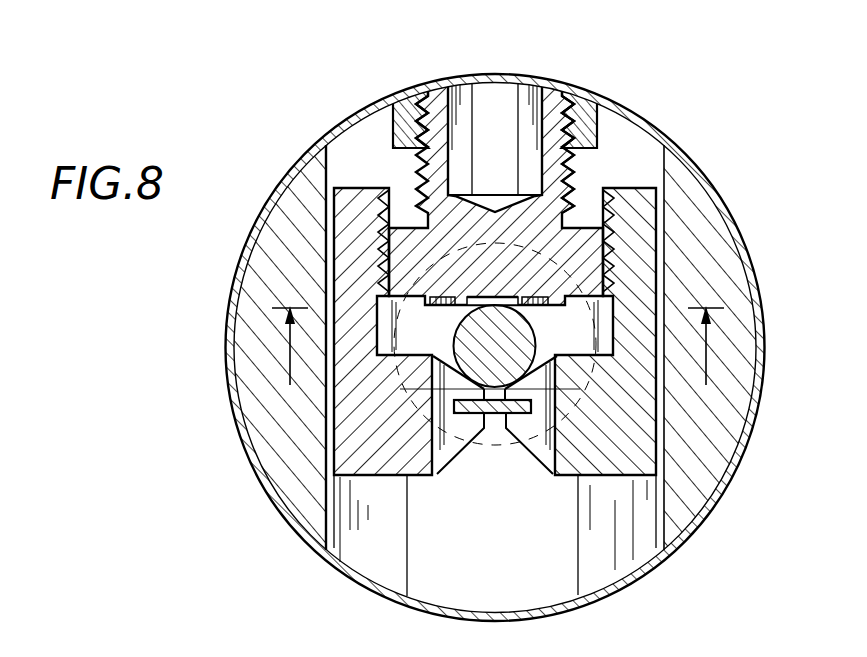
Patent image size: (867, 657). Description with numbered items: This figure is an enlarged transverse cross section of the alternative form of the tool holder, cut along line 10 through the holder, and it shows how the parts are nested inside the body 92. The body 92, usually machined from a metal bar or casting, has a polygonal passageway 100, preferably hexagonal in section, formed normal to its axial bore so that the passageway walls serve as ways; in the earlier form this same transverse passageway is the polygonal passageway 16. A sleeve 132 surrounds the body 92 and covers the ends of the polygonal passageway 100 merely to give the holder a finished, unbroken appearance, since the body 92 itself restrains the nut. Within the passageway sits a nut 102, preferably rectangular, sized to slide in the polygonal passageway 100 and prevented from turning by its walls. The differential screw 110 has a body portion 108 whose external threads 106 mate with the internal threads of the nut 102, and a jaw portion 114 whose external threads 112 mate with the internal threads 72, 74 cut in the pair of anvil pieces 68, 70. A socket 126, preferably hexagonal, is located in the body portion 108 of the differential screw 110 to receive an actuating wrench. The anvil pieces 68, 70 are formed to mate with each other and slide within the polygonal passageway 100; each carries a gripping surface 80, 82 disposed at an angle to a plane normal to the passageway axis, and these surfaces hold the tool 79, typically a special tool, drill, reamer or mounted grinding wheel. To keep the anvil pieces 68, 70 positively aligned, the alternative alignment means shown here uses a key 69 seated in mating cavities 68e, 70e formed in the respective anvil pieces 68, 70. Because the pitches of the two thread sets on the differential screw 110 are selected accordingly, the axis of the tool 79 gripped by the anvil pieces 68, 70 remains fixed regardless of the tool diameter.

The section line arrows 10 is at (498, 357).
The polygonal passageway 16 is at (337, 565).
The anvil piece 68 is at (378, 455).
The mating cavity 68e is at (472, 435).
The key 69 is at (487, 428).
The anvil piece 70 is at (598, 458).
The mating cavity 70e is at (530, 435).
The internal thread 72 is at (398, 190).
The internal thread 74 is at (610, 223).
The tool 79 is at (530, 328).
The gripping surface 80 is at (445, 357).
The gripping surface 82 is at (547, 360).
The body 92 is at (288, 247).
The polygonal passageway 100 is at (630, 556).
The nut 102 is at (587, 100).
The external threads 106 is at (571, 170).
The body portion 108 is at (442, 223).
The differential screw 110 is at (547, 92).
The external threads 112 is at (613, 253).
The jaw portion 114 is at (495, 296).
The socket 126 is at (465, 95).
The sleeve 132 is at (290, 172).